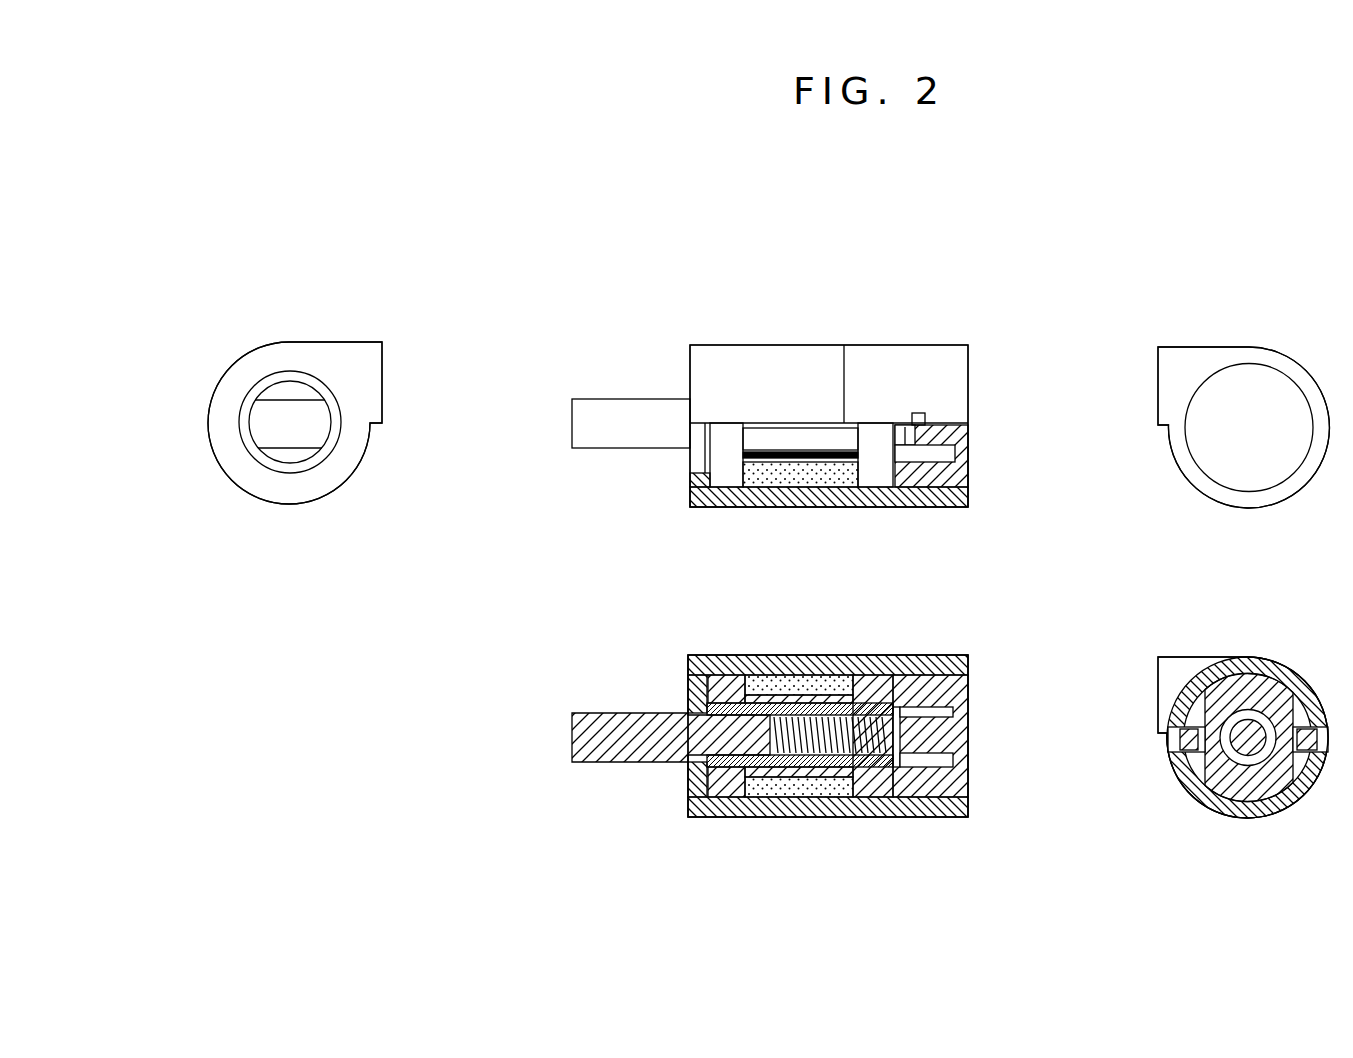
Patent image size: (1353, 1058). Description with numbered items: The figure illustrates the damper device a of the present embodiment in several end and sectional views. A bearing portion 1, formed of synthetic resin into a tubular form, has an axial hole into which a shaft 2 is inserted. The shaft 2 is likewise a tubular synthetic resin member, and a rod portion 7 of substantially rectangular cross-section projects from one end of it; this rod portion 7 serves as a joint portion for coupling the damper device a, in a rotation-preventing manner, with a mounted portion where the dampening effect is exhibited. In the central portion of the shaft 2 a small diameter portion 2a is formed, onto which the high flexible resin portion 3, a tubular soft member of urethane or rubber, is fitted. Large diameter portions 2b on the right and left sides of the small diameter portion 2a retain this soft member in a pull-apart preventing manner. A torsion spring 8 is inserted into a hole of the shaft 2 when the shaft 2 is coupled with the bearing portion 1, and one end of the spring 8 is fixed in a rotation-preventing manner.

The bearing portion 1 is at (252, 352).
The shaft 2 is at (284, 436).
The small diameter portion 2a is at (813, 437).
The large diameter portions 2b is at (727, 477).
The high flexible resin portion 3 is at (797, 473).
The rod portion 7 is at (307, 435).
The spring 8 is at (785, 772).
The damper device a is at (315, 330).